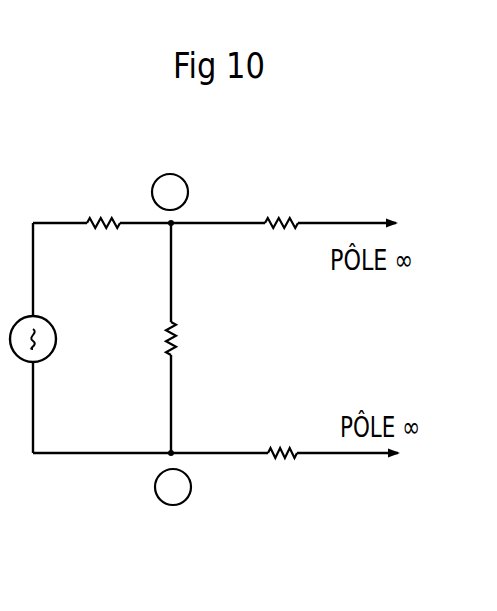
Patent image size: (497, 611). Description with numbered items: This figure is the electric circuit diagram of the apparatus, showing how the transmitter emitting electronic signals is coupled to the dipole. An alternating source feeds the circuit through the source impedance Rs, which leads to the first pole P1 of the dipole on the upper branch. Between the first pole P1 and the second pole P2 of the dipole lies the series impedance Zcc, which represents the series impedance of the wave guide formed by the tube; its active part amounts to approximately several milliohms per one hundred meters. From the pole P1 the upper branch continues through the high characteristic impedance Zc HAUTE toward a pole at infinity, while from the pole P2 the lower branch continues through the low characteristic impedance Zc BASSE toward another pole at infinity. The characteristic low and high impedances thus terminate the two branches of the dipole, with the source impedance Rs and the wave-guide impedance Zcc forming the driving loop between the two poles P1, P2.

The source impedance Rs is at (103, 207).
The first pole of the dipole P1 is at (170, 192).
The second pole of the dipole P2 is at (173, 487).
The series impedance of the wave guide Zcc is at (189, 340).
The high characteristic impedance Zc HAUTE is at (291, 206).
The low characteristic impedance Zc BASSE is at (290, 471).